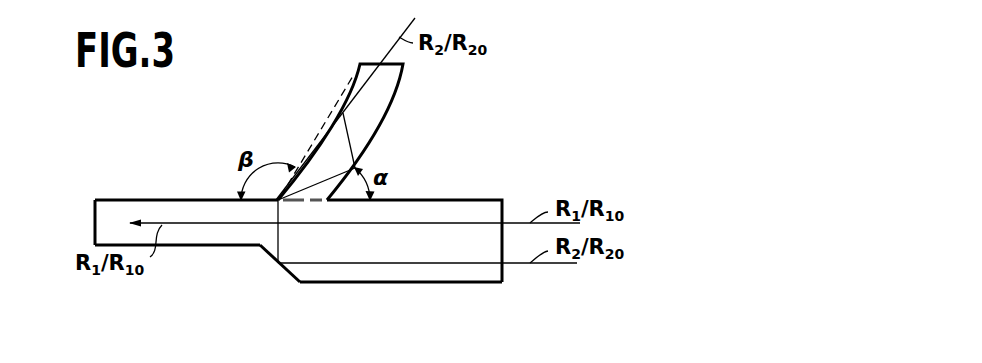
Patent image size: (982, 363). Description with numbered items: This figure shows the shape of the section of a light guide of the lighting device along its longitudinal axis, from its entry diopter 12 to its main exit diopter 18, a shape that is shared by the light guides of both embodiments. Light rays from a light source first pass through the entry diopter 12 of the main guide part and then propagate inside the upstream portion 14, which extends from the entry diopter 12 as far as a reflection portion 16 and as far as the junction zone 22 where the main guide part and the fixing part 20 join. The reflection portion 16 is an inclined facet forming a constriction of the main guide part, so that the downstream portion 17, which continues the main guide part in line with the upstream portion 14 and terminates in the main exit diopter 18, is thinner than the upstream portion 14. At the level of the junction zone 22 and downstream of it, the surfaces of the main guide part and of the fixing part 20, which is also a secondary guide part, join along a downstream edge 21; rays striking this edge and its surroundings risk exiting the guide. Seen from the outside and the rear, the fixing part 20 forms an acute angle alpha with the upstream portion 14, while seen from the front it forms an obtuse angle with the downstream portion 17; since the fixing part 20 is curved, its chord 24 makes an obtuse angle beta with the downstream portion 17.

The entry diopter 12 is at (502, 210).
The upstream portion 14 is at (427, 283).
The reflection portion 16 is at (285, 271).
The downstream portion 17 is at (171, 200).
The main exit diopter 18 is at (95, 222).
The fixing part 20 is at (400, 108).
The downstream edge 21 is at (278, 200).
The junction zone 22 is at (303, 203).
The chord 24 is at (328, 115).